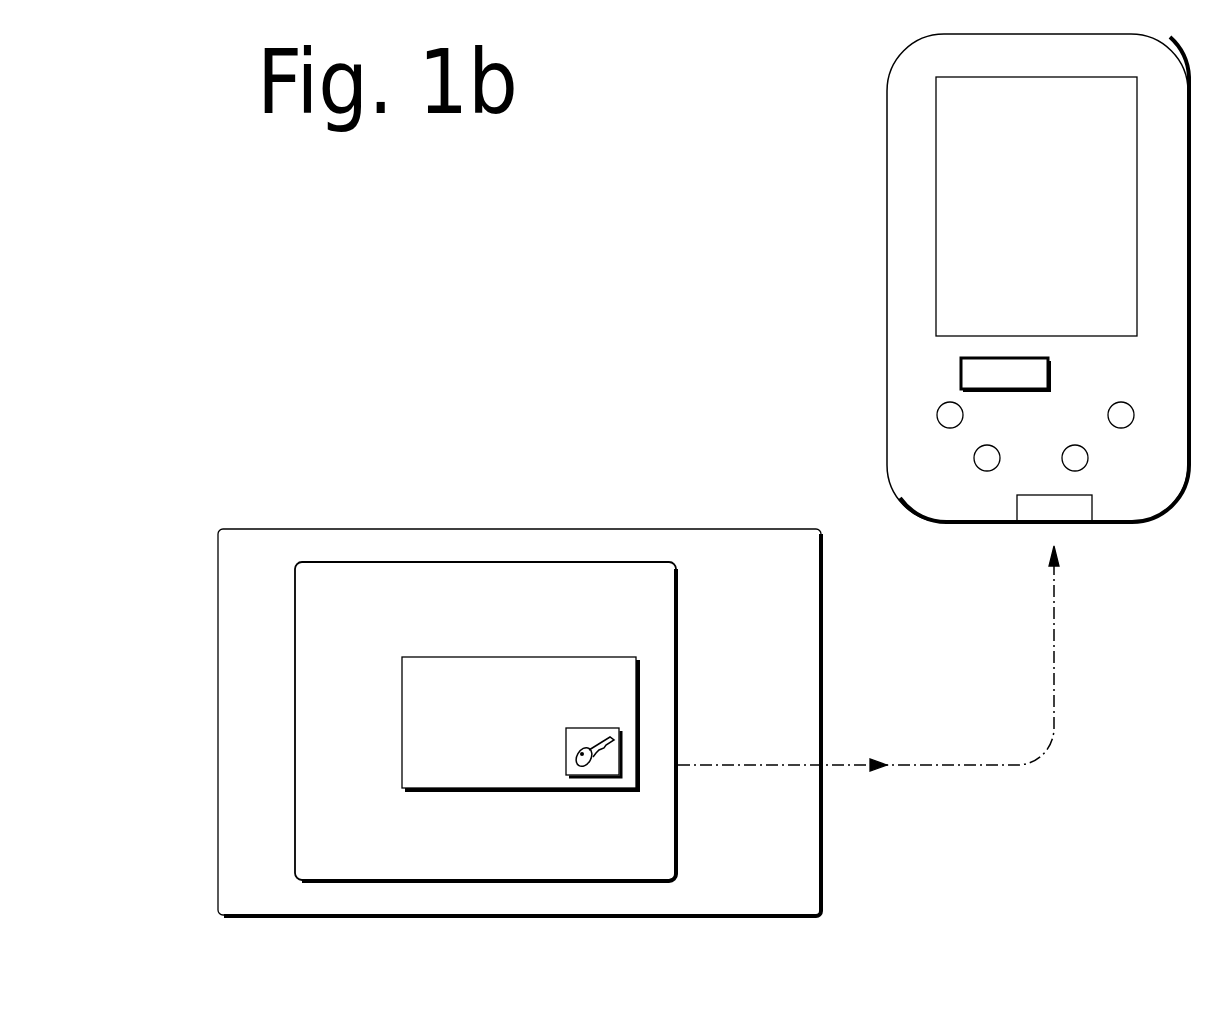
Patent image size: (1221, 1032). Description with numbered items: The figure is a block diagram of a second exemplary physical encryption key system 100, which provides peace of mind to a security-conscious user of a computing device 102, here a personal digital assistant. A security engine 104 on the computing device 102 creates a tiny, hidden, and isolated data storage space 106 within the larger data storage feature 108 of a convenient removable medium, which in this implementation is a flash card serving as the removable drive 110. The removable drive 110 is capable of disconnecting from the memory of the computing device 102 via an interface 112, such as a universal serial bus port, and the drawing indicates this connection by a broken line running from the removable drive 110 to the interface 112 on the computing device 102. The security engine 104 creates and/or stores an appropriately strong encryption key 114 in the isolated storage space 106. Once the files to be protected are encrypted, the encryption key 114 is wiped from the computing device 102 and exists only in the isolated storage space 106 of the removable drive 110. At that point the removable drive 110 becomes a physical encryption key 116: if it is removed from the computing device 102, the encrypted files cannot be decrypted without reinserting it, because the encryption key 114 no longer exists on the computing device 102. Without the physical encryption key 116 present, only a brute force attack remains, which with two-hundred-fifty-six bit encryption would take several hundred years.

The physical encryption key system 100 is at (645, 250).
The computing device 102 is at (887, 210).
The security engine 104 is at (961, 372).
The isolated data storage space 106 is at (565, 755).
The data storage feature 108 is at (447, 655).
The removable drive 110 is at (566, 562).
The interface 112 is at (1017, 512).
The encryption key 114 is at (565, 730).
The physical encryption key 116 is at (753, 532).